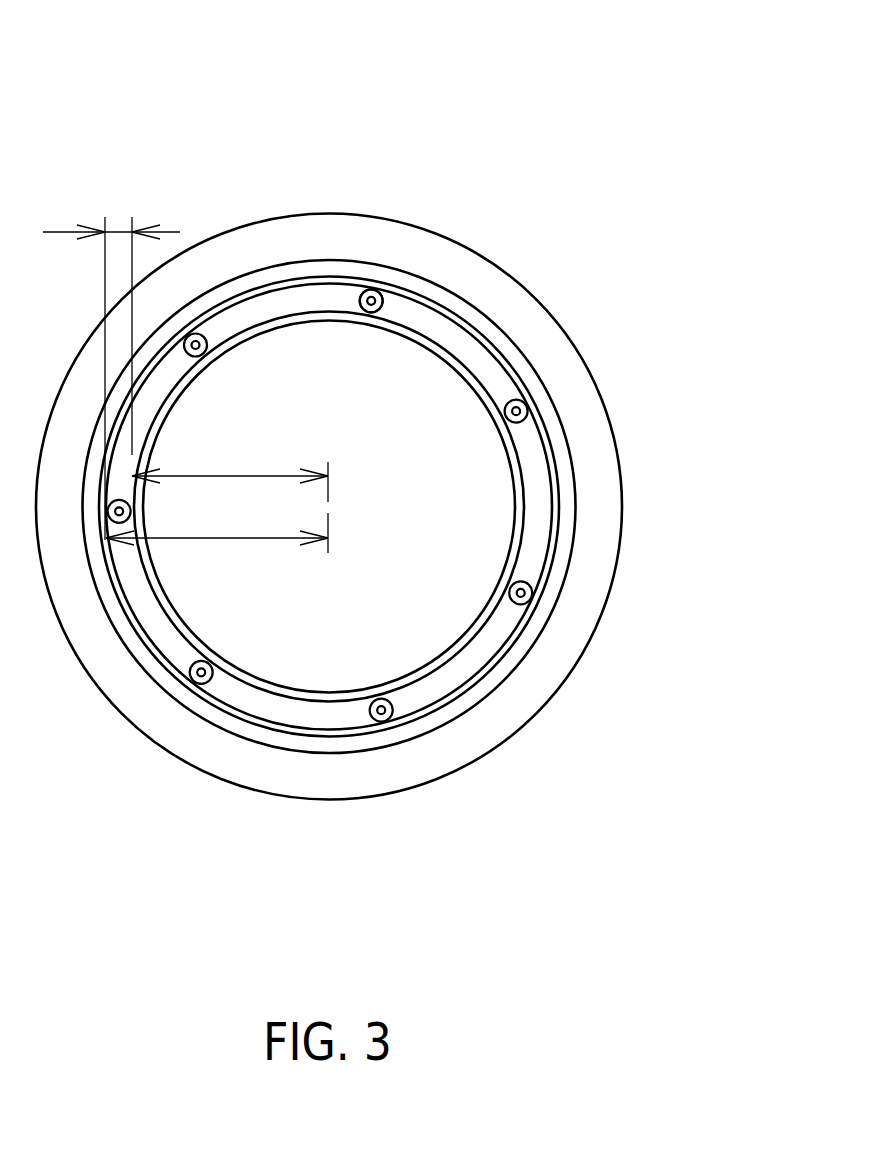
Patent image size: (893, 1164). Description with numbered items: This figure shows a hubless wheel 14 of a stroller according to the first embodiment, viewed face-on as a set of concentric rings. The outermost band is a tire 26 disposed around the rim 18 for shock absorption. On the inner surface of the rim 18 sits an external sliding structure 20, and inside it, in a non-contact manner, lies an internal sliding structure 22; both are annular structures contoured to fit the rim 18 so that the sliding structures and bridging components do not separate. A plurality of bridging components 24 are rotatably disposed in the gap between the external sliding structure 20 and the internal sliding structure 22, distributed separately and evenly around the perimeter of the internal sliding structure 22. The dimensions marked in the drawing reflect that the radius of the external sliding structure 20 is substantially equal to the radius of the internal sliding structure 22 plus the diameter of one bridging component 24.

The hubless wheel 14 is at (558, 98).
The rim 18 is at (288, 273).
The external sliding structure 20 is at (363, 290).
The internal sliding structure 22 is at (321, 314).
The bridging component 24 is at (522, 594).
The tire 26 is at (562, 355).